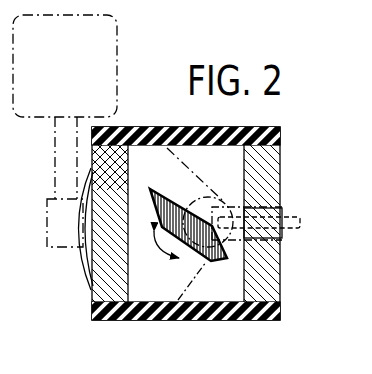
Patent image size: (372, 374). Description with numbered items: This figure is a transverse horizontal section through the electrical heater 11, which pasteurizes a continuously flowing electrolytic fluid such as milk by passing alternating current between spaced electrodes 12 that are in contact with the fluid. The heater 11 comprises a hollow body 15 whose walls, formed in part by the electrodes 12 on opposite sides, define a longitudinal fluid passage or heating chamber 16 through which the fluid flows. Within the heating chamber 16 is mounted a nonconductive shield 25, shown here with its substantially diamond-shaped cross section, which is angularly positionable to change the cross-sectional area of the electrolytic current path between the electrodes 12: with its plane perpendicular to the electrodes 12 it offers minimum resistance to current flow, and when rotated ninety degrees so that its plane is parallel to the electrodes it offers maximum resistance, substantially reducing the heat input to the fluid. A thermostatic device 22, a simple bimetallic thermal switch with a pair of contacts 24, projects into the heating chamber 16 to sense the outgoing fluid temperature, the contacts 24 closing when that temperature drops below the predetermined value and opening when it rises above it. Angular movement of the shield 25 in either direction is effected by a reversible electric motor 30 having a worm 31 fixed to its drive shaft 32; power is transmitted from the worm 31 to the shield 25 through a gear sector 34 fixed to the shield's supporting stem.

The electrical heater 11 is at (170, 222).
The electrodes 12 is at (118, 250).
The hollow body 15 is at (144, 270).
The heating chamber 16 is at (236, 158).
The thermostatic device 22 is at (283, 213).
The contacts 24 is at (294, 217).
The nonconductive shield 25 is at (165, 222).
The reversible electric motor 30 is at (103, 62).
The worm 31 is at (50, 238).
The drive shaft 32 is at (62, 148).
The gear sector 34 is at (193, 285).